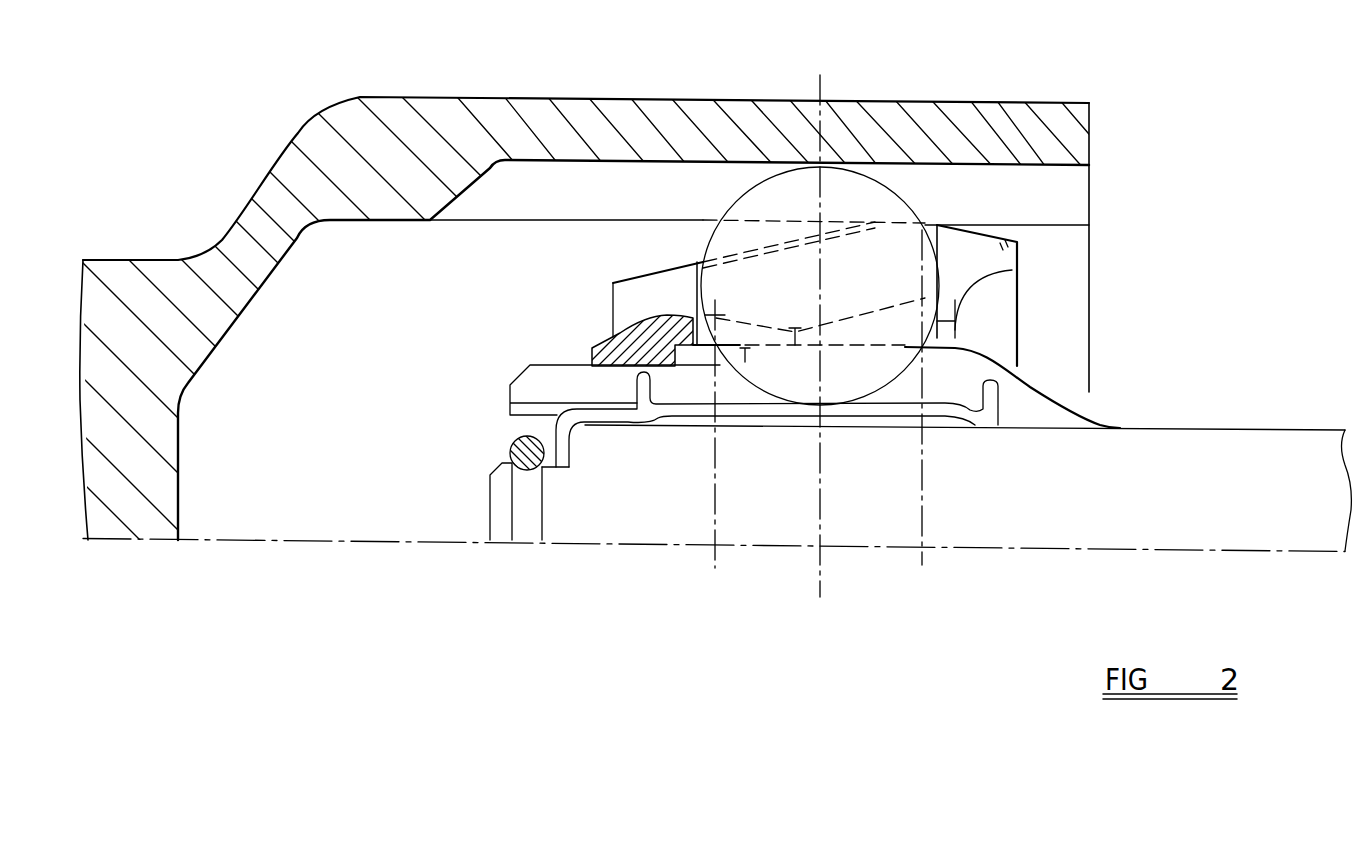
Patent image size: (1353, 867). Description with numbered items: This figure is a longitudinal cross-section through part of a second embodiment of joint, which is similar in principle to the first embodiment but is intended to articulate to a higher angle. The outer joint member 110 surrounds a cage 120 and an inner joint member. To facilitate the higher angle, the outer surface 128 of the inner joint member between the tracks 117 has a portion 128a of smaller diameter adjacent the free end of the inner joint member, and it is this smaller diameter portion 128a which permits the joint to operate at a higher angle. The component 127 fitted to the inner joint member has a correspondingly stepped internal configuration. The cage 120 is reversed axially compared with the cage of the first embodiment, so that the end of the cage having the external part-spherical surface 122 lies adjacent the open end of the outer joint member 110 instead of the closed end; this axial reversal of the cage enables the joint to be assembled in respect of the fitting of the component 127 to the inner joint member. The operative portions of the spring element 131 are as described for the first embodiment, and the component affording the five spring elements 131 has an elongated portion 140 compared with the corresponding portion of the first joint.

The outer joint member 110 is at (985, 120).
The external part-spherical surface 122 is at (997, 225).
The cage 120 is at (968, 255).
The outer surface of the inner joint member 128 is at (883, 337).
The tracks 117 is at (958, 369).
The component 127 is at (601, 342).
The smaller diameter portion 128a is at (552, 366).
The elongated portion 140 is at (622, 427).
The spring element 131 is at (885, 418).